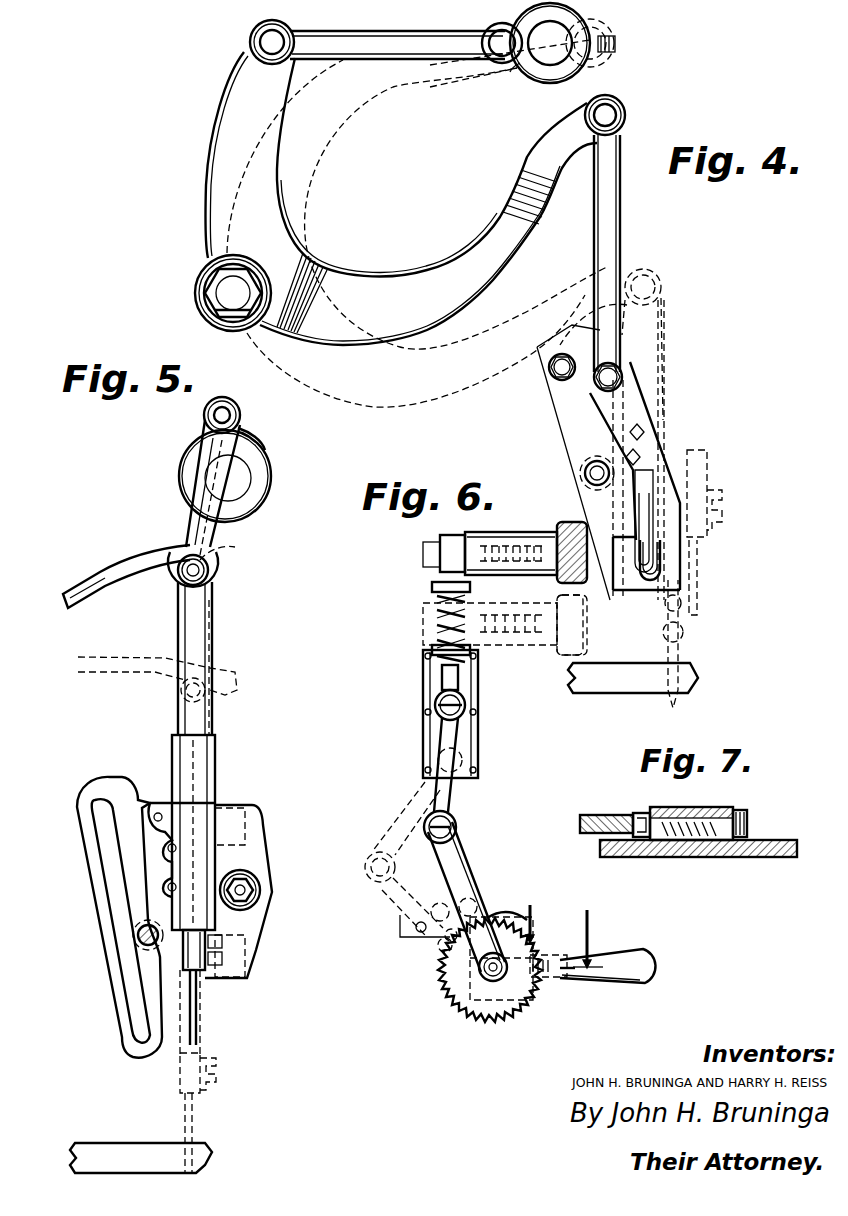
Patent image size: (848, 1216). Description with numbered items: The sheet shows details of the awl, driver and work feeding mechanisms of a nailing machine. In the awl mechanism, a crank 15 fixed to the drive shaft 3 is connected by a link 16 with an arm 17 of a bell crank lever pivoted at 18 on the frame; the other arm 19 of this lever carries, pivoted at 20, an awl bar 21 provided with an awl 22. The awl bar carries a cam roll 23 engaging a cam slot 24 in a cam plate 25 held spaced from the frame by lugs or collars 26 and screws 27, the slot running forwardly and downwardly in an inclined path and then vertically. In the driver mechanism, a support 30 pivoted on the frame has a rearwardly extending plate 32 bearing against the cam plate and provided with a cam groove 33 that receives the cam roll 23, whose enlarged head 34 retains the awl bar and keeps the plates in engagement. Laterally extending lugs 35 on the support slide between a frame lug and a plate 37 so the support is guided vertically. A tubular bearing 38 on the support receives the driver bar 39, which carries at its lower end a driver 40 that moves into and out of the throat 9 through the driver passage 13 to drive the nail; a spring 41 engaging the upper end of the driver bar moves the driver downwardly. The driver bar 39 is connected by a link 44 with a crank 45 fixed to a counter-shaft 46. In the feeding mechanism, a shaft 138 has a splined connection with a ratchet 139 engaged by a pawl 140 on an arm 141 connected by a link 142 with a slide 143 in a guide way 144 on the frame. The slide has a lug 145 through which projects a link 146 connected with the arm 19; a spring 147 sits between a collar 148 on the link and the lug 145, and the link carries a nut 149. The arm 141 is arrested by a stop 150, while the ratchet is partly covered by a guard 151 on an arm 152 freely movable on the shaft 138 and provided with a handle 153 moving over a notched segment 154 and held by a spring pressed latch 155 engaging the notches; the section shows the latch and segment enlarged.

In FIG. 4, the drive shaft 3 is at (524, 28).
In FIG. 4, the throat 9 is at (696, 675).
In FIG. 5, the throat 9 is at (215, 1156).
In FIG. 4, the driver passage 13 is at (680, 668).
In FIG. 5, the driver passage 13 is at (196, 1148).
In FIG. 4, the crank 15 is at (519, 66).
In FIG. 4, the link 16 is at (396, 42).
In FIG. 4, the arm 17 is at (232, 84).
In FIG. 4, the pivot 18 is at (222, 290).
In FIG. 4, the arm 19 is at (502, 226).
In FIG. 6, the arm 19 is at (562, 530).
In FIG. 4, the pivot 20 is at (618, 100).
In FIG. 4, the awl bar 21 is at (612, 214).
In FIG. 4, the awl 22 is at (630, 512).
In FIG. 4, the cam roll 23 is at (625, 378).
In FIG. 5, the cam roll 23 is at (140, 940).
In FIG. 4, the cam slot 24 is at (648, 495).
In FIG. 4, the cam plate 25 is at (570, 327).
In FIG. 4, the lugs or collars 26 is at (547, 350).
In FIG. 4, the screws 27 is at (550, 368).
In FIG. 5, the support 30 is at (180, 628).
In FIG. 4, the plate 32 is at (586, 405).
In FIG. 5, the plate 32 is at (98, 780).
In FIG. 4, the cam groove 33 is at (615, 548).
In FIG. 5, the cam groove 33 is at (115, 858).
In FIG. 5, the enlarged head 34 is at (140, 930).
In FIG. 5, the lugs 35 is at (248, 820).
In FIG. 5, the plate 37 is at (262, 862).
In FIG. 5, the tubular bearing 38 is at (200, 762).
In FIG. 4, the driver bar 39 is at (706, 466).
In FIG. 5, the driver bar 39 is at (205, 656).
In FIG. 4, the driver 40 is at (698, 581).
In FIG. 5, the driver 40 is at (197, 1012).
In FIG. 5, the spring 41 is at (137, 560).
In FIG. 5, the link 44 is at (208, 478).
In FIG. 5, the crank 45 is at (205, 425).
In FIG. 5, the counter-shaft 46 is at (240, 470).
In FIG. 6, the shaft 138 is at (494, 982).
In FIG. 6, the ratchet 139 is at (452, 1004).
In FIG. 6, the pawl 140 is at (455, 942).
In FIG. 6, the arm 141 is at (470, 852).
In FIG. 6, the link 142 is at (456, 786).
In FIG. 6, the slide 143 is at (466, 702).
In FIG. 6, the guide way 144 is at (425, 740).
In FIG. 6, the lug 145 is at (470, 640).
In FIG. 6, the link 146 is at (438, 682).
In FIG. 6, the spring 147 is at (437, 605).
In FIG. 6, the collar 148 is at (470, 588).
In FIG. 6, the nut 149 is at (440, 652).
In FIG. 6, the stop 150 is at (416, 928).
In FIG. 6, the guard 151 is at (495, 910).
In FIG. 6, the arm 152 is at (502, 935).
In FIG. 6, the handle 153 is at (645, 963).
In FIG. 7, the handle 153 is at (770, 845).
In FIG. 6, the notched segment 154 is at (540, 955).
In FIG. 7, the notched segment 154 is at (613, 822).
In FIG. 6, the spring pressed latch 155 is at (546, 985).
In FIG. 7, the spring pressed latch 155 is at (670, 830).